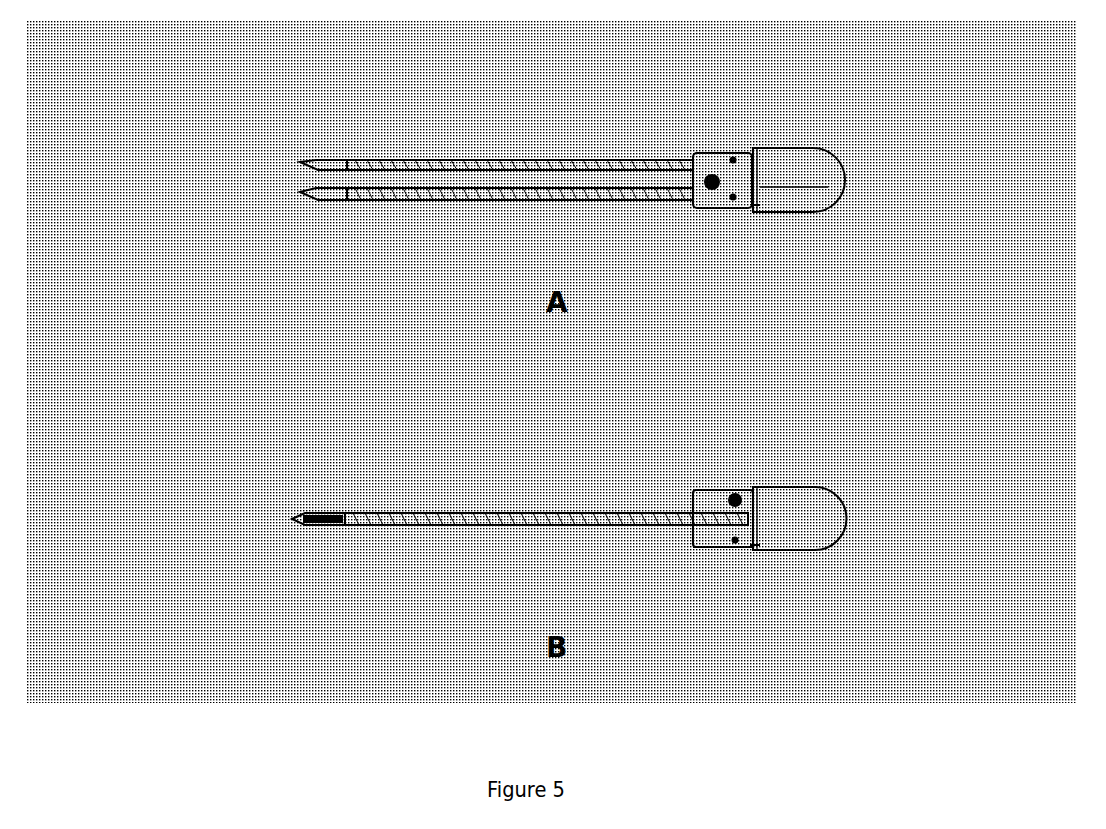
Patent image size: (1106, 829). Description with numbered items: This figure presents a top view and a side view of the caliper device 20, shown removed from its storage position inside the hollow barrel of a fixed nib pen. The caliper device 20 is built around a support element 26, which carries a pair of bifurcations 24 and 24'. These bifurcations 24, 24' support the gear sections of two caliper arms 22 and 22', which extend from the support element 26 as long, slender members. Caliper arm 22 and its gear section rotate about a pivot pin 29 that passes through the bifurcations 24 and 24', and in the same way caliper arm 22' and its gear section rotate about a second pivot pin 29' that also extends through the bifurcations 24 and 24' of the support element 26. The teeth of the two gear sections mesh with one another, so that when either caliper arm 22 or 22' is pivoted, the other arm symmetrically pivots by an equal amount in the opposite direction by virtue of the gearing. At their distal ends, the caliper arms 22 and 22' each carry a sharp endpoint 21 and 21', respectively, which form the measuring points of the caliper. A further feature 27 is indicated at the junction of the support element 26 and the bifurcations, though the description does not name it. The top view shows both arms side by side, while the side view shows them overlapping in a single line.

The caliper device 20 is at (580, 140).
The sharp endpoint 21 is at (273, 123).
The sharp endpoint 21' is at (275, 356).
The caliper arm 22 is at (520, 121).
The caliper arm 22' is at (546, 356).
The bifurcation 24 is at (709, 316).
The bifurcation 24' is at (708, 585).
The support element 26 is at (820, 137).
The LED base 27 is at (758, 212).
The pivot pin 29 is at (753, 125).
The pivot pin 29' is at (762, 369).